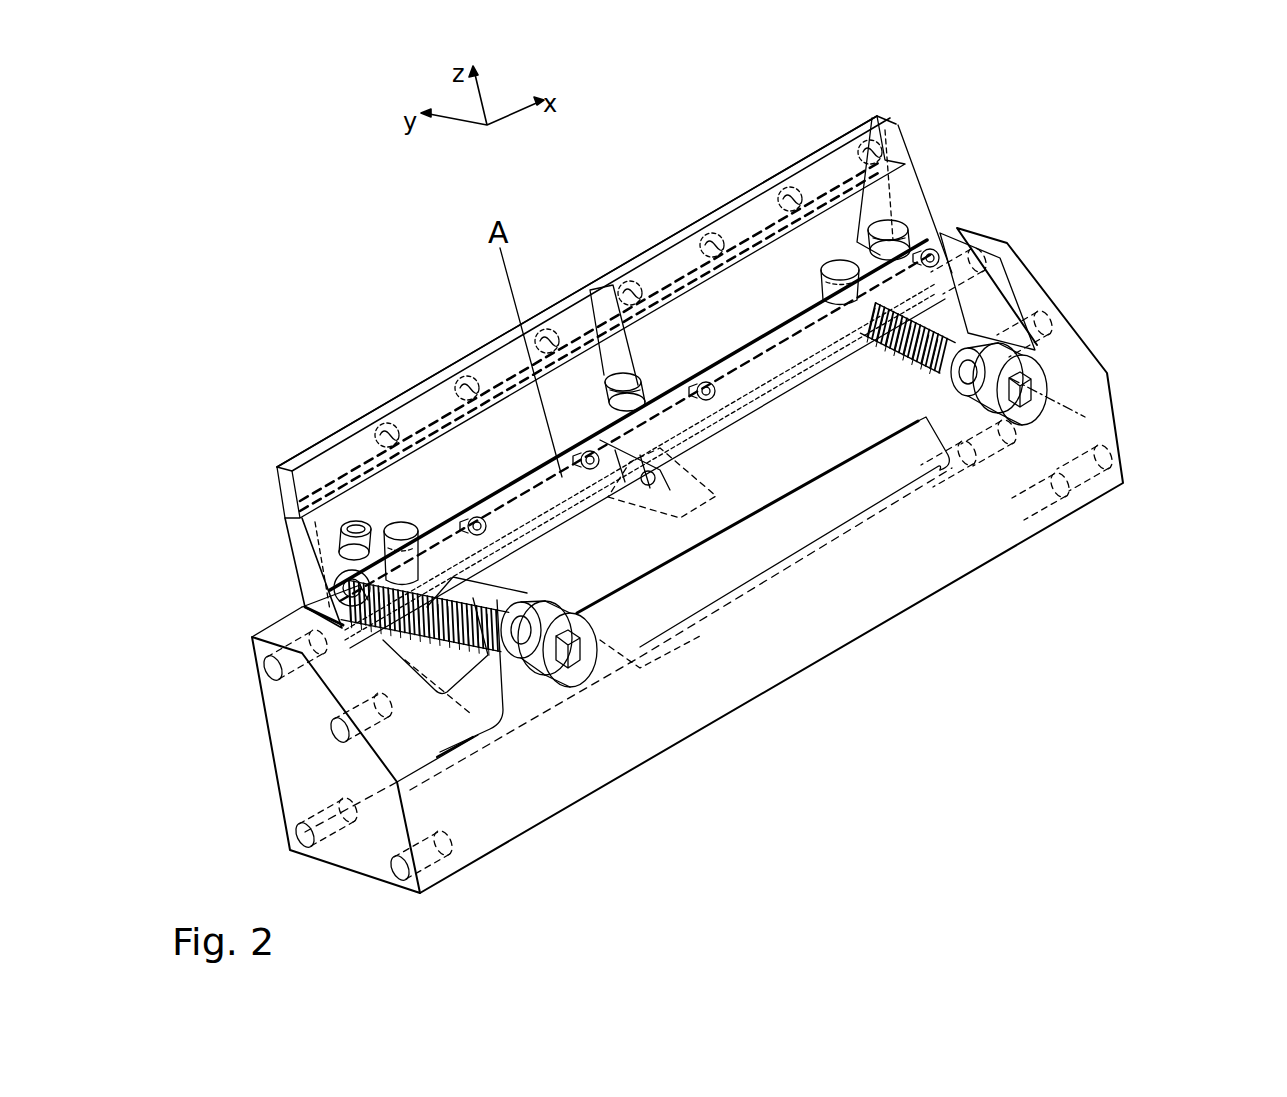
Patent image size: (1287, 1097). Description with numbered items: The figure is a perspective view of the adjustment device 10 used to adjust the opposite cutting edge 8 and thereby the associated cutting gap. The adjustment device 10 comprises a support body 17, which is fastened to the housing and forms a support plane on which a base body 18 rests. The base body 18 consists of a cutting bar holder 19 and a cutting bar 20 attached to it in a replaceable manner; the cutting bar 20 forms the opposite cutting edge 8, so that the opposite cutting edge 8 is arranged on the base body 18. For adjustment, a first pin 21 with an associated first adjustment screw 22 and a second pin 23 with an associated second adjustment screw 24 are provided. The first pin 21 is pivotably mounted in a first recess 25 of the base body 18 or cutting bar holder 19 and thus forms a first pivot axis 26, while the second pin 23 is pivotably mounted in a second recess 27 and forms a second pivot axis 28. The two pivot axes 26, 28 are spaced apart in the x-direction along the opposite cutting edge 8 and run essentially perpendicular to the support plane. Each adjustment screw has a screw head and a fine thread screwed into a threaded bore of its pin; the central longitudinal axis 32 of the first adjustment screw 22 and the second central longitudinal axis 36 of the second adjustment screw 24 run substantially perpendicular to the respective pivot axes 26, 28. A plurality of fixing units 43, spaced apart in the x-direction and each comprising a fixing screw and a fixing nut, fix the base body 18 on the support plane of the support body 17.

The opposite cutting edge 8 is at (723, 203).
The adjustment device 10 is at (1130, 288).
The support body 17 is at (1127, 432).
The base body 18 is at (920, 160).
The cutting bar holder 19 is at (314, 592).
The cutting bar 20 is at (284, 517).
The first pin 21 is at (407, 530).
The first adjustment screw 22 is at (573, 688).
The second pin 23 is at (903, 230).
The second adjustment screw 24 is at (1052, 386).
The first recess 25 is at (396, 525).
The first pivot axis 26 is at (392, 520).
The second recess 27 is at (872, 118).
The second pivot axis 28 is at (838, 260).
The central longitudinal axis 32 is at (643, 672).
The second central longitudinal axis 36 is at (1067, 404).
The fixing units 43 is at (900, 203).